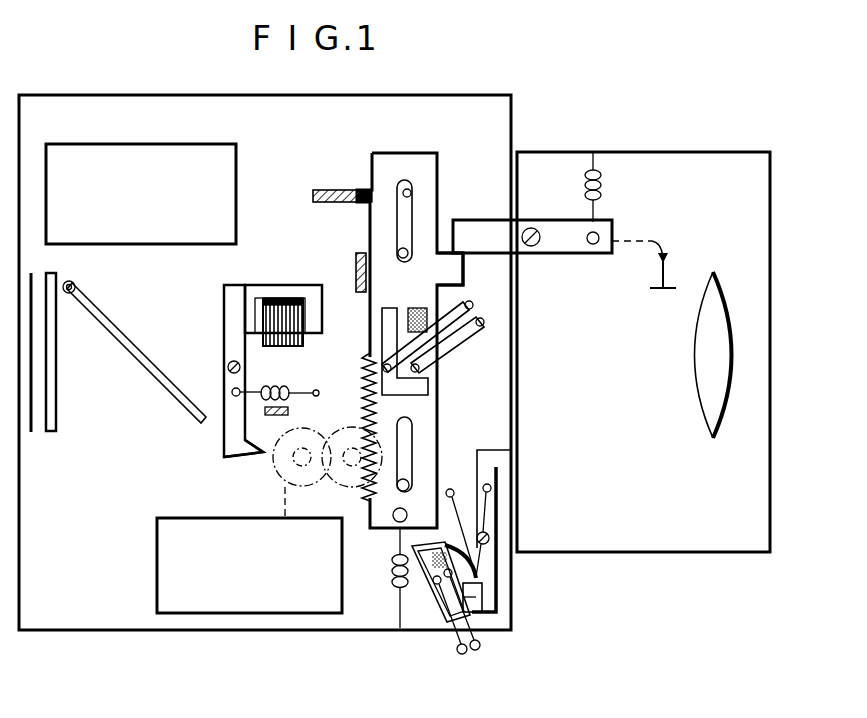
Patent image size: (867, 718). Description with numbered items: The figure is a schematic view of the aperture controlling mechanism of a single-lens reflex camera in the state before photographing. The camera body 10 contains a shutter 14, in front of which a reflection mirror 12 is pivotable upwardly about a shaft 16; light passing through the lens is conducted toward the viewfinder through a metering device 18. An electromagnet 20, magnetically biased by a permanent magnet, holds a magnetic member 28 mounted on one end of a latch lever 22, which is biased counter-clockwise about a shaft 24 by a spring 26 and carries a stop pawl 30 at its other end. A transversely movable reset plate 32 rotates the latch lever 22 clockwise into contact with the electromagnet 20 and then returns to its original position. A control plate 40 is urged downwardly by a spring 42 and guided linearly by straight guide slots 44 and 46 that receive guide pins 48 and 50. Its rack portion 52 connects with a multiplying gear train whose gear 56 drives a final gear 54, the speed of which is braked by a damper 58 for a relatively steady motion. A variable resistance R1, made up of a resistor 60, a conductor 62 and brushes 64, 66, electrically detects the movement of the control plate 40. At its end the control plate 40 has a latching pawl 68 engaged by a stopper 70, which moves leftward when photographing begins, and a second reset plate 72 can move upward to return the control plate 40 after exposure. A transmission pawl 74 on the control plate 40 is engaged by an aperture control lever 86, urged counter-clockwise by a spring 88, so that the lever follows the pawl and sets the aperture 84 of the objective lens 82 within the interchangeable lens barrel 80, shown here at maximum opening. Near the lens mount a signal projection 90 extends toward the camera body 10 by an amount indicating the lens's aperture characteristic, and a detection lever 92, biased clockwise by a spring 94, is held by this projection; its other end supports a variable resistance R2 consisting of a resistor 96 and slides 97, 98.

The camera body 10 is at (49, 95).
The reflection mirror 12 is at (168, 392).
The shutter 14 is at (58, 412).
The shaft 16 is at (76, 285).
The metering device 18 is at (154, 144).
The electromagnet 20 is at (285, 298).
The latch lever 22 is at (220, 322).
The shaft 24 is at (228, 364).
The spring 26 is at (283, 386).
The magnetic member 28 is at (248, 290).
The stop pawl 30 is at (256, 455).
The reset plate 32 is at (275, 417).
The control plate 40 is at (408, 150).
The spring 42 is at (393, 578).
The guide slot 44 is at (411, 192).
The guide slot 46 is at (409, 438).
The guide pin 48 is at (406, 250).
The guide pin 50 is at (408, 481).
The rack portion 52 is at (367, 391).
The final gear 54 is at (284, 487).
The gear of multiplying gear train 56 is at (346, 507).
The damper 58 is at (157, 556).
The resistor 60 is at (416, 307).
The conductor 62 is at (382, 320).
The brush 64 is at (438, 356).
The brush 66 is at (391, 357).
The latching pawl 68 is at (356, 181).
The stopper 70 is at (322, 203).
The reset plate 72 is at (356, 272).
The transmission pawl 74 is at (452, 272).
The interchangeable lens barrel 80 is at (707, 157).
The objective lens 82 is at (716, 290).
The aperture 84 is at (657, 291).
The aperture control lever 86 is at (480, 228).
The spring 88 is at (601, 181).
The signal projection 90 is at (511, 441).
The detection lever 92 is at (498, 563).
The spring 94 is at (488, 505).
The resistor 96 is at (443, 548).
The slide 97 is at (442, 598).
The slide 98 is at (455, 607).
The variable resistance R1 is at (443, 311).
The variable resistance R2 is at (479, 618).